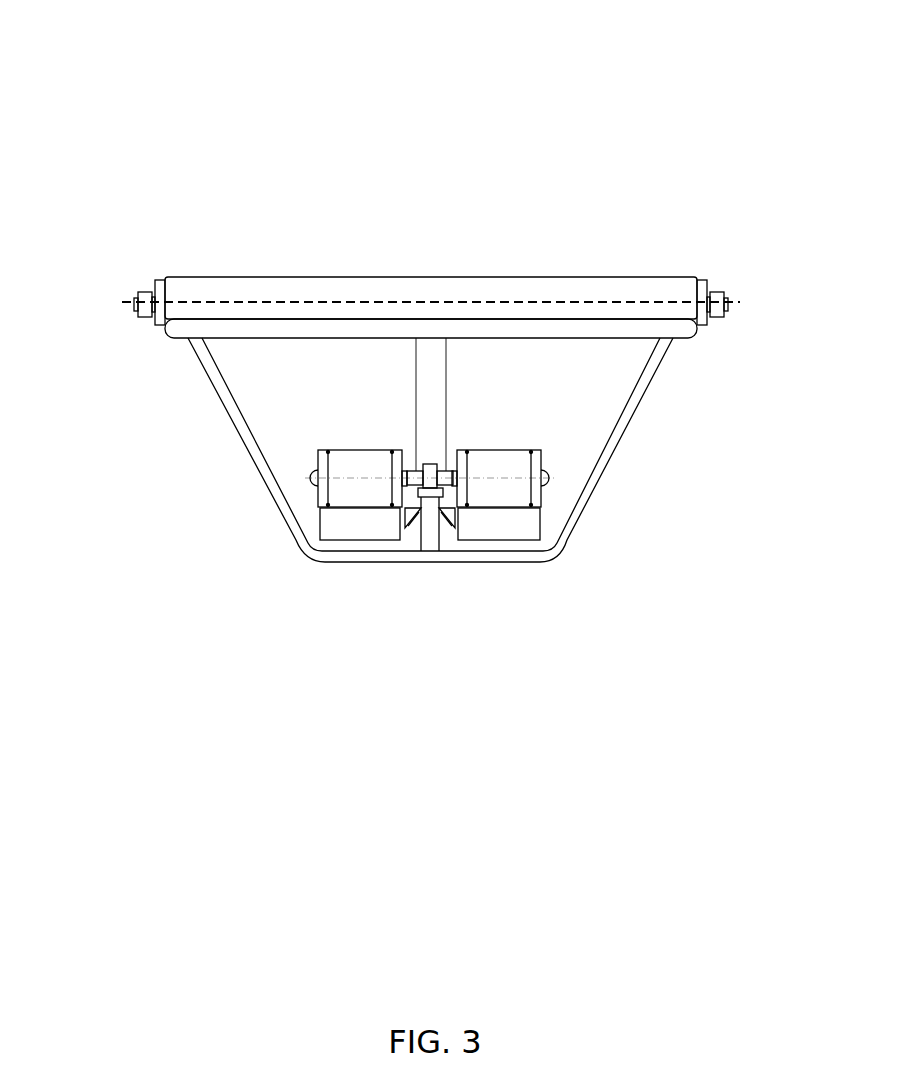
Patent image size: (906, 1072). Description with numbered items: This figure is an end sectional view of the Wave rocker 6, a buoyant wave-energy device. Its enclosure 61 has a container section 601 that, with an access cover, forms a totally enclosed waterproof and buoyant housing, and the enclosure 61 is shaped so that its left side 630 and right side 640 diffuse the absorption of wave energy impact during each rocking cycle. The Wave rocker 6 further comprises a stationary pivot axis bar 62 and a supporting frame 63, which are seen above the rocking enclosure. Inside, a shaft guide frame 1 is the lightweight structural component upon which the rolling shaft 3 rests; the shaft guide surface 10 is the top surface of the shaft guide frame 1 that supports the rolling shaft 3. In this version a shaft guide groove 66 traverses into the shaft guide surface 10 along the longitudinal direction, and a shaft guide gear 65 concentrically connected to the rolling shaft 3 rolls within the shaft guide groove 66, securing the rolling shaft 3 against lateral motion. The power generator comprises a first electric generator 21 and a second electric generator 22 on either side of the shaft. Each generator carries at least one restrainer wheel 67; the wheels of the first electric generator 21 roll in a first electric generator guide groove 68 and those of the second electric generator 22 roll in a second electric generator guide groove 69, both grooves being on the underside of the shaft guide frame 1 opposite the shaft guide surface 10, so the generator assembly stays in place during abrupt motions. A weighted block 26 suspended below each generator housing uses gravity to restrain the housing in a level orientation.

The Wave rocker 6 is at (360, 172).
The supporting frame 63 is at (442, 277).
The stationary pivot axis bar 62 is at (711, 296).
The container section 601 is at (260, 372).
The left side 630 is at (190, 444).
The right side 640 is at (658, 409).
The enclosure 61 is at (533, 557).
The first electric generator 21 is at (360, 455).
The second electric generator 22 is at (523, 455).
The weighted block 26 is at (330, 523).
The shaft guide gear 65 is at (430, 464).
The shaft guide groove 66 is at (419, 482).
The rolling shaft 3 is at (445, 472).
The shaft guide surface 10 is at (446, 482).
The shaft guide frame 1 is at (429, 532).
The first electric generator guide groove 68 is at (412, 512).
The second electric generator guide groove 69 is at (448, 512).
The restrainer wheel 67 is at (421, 535).